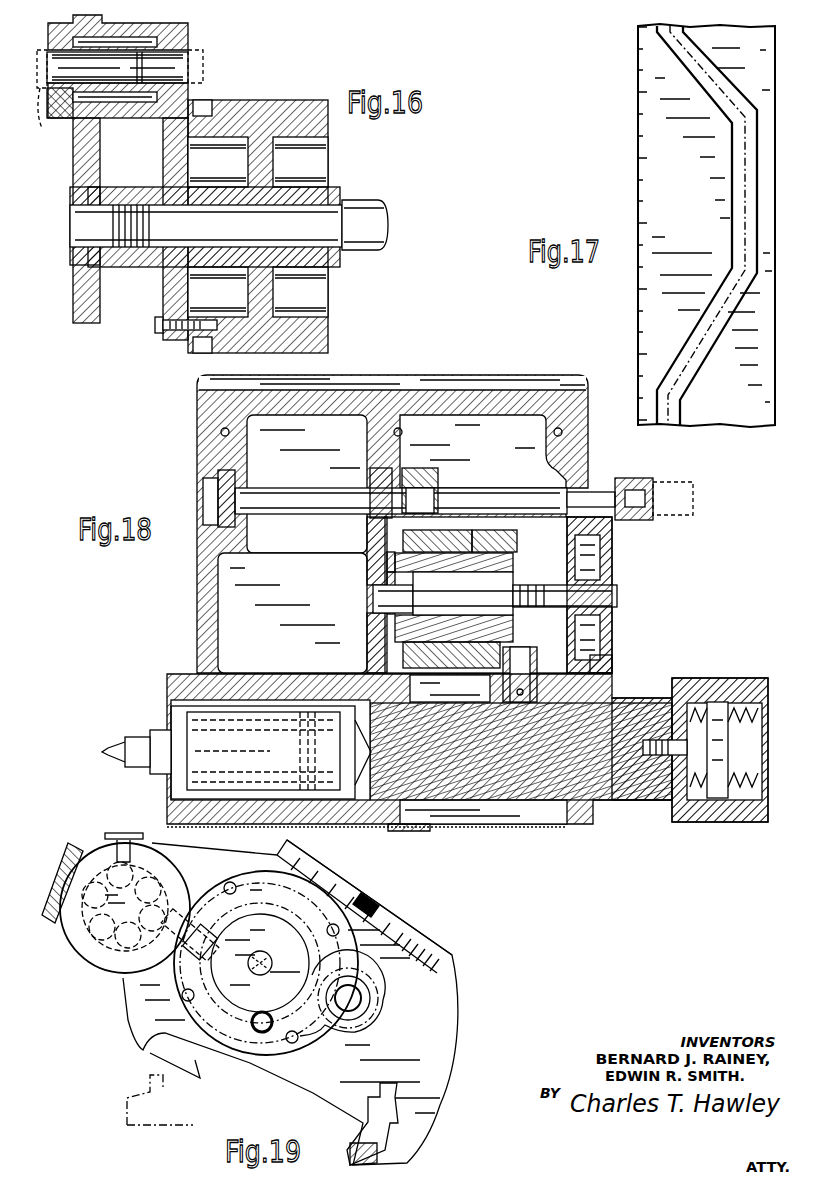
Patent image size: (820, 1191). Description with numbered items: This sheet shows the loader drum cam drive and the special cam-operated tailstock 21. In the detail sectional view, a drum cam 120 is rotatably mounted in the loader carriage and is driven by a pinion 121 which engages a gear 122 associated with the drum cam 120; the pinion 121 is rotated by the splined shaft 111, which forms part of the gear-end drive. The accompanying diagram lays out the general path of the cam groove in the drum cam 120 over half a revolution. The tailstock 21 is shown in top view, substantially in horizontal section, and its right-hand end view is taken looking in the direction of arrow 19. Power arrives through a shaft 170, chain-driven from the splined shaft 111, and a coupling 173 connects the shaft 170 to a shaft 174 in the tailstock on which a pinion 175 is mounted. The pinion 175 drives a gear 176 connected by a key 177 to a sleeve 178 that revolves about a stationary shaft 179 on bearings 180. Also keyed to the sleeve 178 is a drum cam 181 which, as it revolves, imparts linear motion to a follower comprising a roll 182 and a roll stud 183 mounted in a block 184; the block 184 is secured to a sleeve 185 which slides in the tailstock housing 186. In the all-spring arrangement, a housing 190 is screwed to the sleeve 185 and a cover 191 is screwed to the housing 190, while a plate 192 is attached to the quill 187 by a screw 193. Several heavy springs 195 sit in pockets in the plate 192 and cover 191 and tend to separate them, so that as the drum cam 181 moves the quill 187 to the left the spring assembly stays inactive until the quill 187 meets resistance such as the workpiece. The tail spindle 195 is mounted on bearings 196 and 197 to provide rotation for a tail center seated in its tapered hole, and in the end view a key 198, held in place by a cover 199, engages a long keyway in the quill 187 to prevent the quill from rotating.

In FIG. 18, the cam-operated tailstock 21 is at (512, 392).
In FIG. 19, the cam-operated tailstock 21 is at (447, 1006).
In FIG. 18, the arrow 19 is at (673, 567).
In FIG. 16, the splined shaft 111 is at (67, 186).
In FIG. 16, the drum cam 120 is at (278, 100).
In FIG. 17, the drum cam 120 is at (638, 61).
In FIG. 16, the pinion 121 is at (190, 50).
In FIG. 16, the gear 122 is at (165, 340).
In FIG. 18, the shaft 170 is at (668, 482).
In FIG. 18, the coupling 173 is at (623, 478).
In FIG. 18, the shaft 174 is at (478, 488).
In FIG. 19, the shaft 174 is at (362, 998).
In FIG. 18, the pinion 175 is at (421, 468).
In FIG. 19, the pinion 175 is at (378, 1026).
In FIG. 18, the gear 176 is at (370, 548).
In FIG. 19, the gear 176 is at (301, 1045).
In FIG. 18, the key 177 is at (389, 562).
In FIG. 18, the sleeve 178 is at (454, 597).
In FIG. 18, the stationary shaft 179 is at (495, 593).
In FIG. 19, the stationary shaft 179 is at (269, 956).
In FIG. 18, the bearings 180 is at (390, 575).
In FIG. 18, the drum cam 181 is at (490, 530).
In FIG. 18, the roll 182 is at (580, 640).
In FIG. 19, the roll 182 is at (206, 960).
In FIG. 18, the roll stud 183 is at (612, 660).
In FIG. 19, the roll stud 183 is at (229, 920).
In FIG. 18, the block 184 is at (503, 697).
In FIG. 19, the block 184 is at (191, 925).
In FIG. 18, the sleeve 185 is at (616, 698).
In FIG. 19, the sleeve 185 is at (68, 940).
In FIG. 18, the tailstock housing 186 is at (355, 824).
In FIG. 18, the quill 187 is at (521, 751).
In FIG. 18, the housing 190 is at (680, 678).
In FIG. 19, the housing 190 is at (105, 975).
In FIG. 18, the cover 191 is at (765, 738).
In FIG. 18, the plate 192 is at (740, 745).
In FIG. 18, the screw 193 is at (765, 760).
In FIG. 18, the tail spindle 195 is at (262, 706).
In FIG. 18, the bearing 196 is at (331, 706).
In FIG. 18, the bearing 197 is at (194, 712).
In FIG. 19, the key 198 is at (118, 860).
In FIG. 19, the cover 199 is at (126, 833).